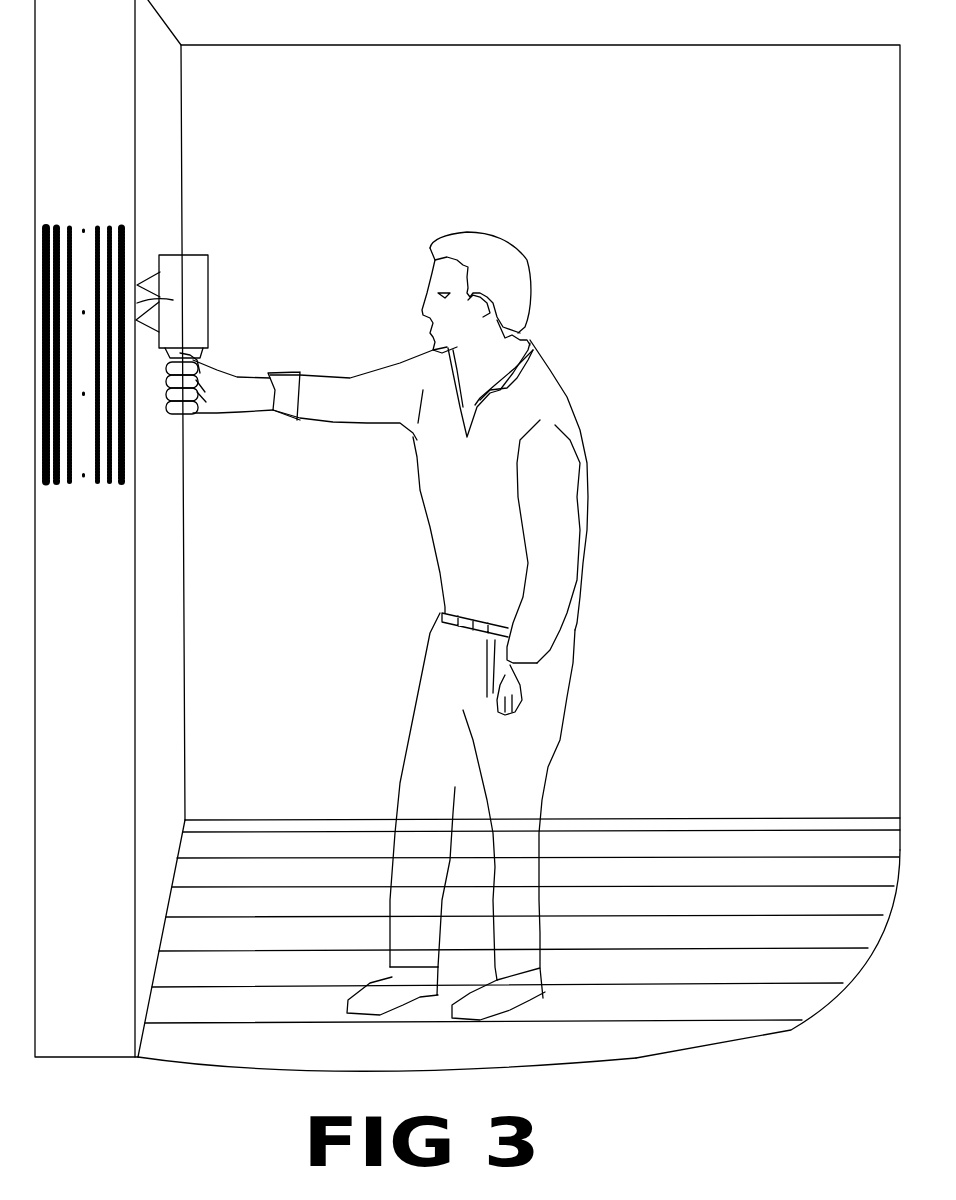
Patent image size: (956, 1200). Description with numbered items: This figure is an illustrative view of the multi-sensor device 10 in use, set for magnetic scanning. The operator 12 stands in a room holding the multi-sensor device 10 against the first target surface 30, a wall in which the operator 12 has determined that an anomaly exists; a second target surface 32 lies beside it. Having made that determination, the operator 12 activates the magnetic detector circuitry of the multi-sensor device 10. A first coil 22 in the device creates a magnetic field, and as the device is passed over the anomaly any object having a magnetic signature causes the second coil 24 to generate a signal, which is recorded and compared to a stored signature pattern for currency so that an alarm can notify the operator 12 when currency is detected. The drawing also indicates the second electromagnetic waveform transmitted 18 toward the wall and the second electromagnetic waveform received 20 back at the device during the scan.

The multi-sensor device 10 is at (216, 306).
The operator 12 is at (490, 243).
The second electromagnetic waveform transmitted 18 is at (148, 270).
The second electromagnetic waveform received 20 is at (137, 318).
The first coil 22 is at (183, 301).
The second coil 24 is at (63, 482).
The first target surface 30 is at (137, 597).
The second target surface 32 is at (40, 692).